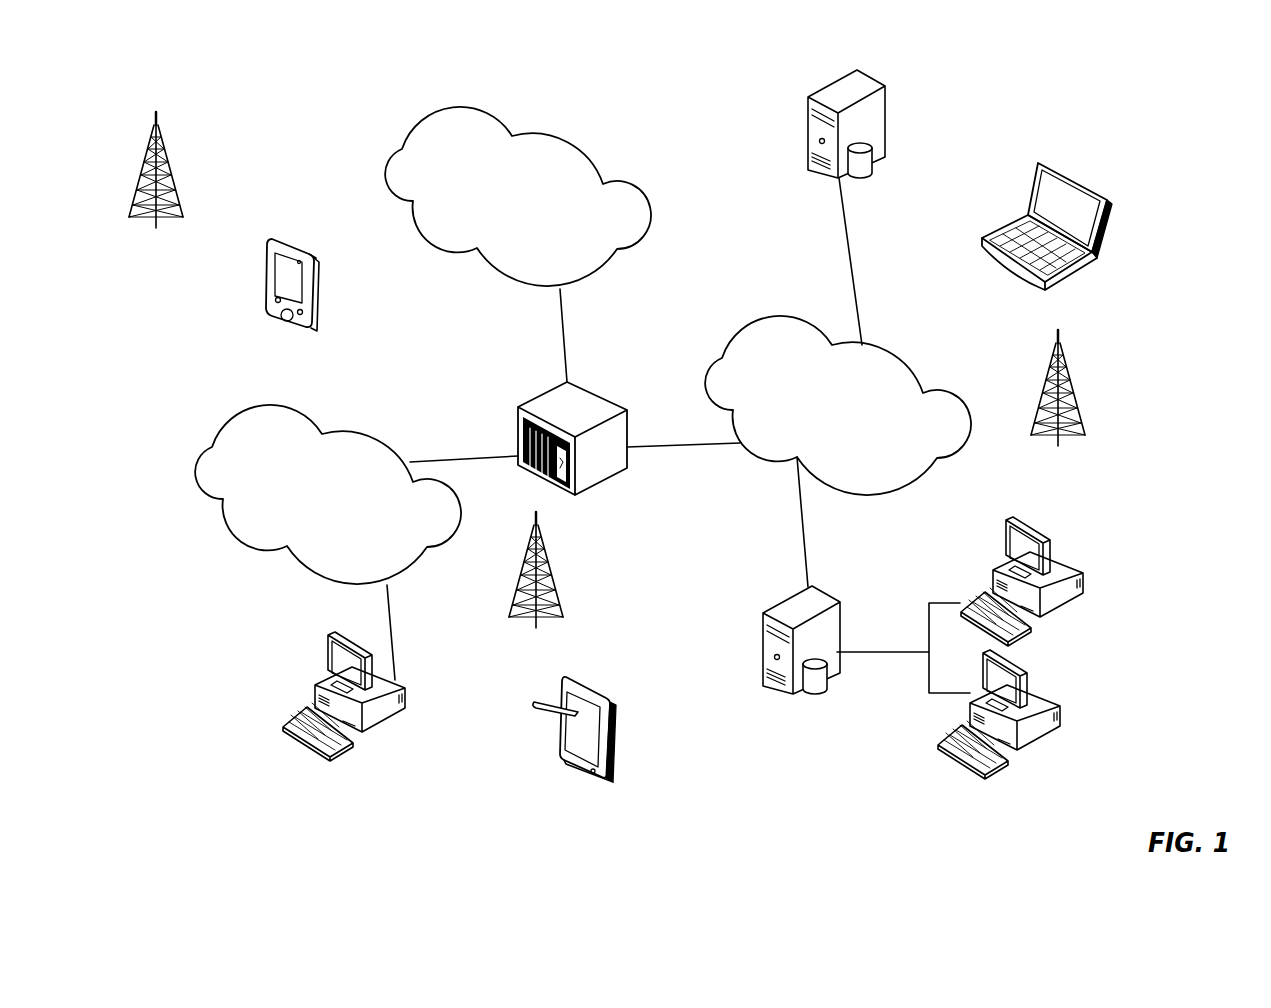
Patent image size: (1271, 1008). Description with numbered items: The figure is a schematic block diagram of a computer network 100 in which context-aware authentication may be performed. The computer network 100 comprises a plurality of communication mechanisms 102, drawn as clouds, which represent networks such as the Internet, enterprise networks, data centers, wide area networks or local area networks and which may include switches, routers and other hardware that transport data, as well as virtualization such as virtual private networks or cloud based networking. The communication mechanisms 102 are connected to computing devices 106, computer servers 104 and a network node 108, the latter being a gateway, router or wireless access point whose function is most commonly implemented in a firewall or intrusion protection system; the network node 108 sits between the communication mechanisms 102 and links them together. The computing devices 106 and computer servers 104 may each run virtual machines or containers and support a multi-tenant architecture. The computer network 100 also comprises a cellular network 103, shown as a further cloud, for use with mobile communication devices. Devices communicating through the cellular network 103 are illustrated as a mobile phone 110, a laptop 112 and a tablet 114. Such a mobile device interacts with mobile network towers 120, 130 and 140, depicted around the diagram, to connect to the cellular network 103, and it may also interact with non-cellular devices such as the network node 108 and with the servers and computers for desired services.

The computer network 100 is at (970, 150).
The communication mechanisms 102 is at (310, 418).
The cellular network 103 is at (557, 140).
The computer servers 104 is at (810, 115).
The computing devices 106 is at (405, 688).
The network node 108 is at (592, 392).
The mobile phone 110 is at (298, 243).
The laptop 112 is at (1083, 186).
The tablet 114 is at (597, 690).
The mobile network tower 120 is at (536, 584).
The mobile network tower 130 is at (1058, 402).
The mobile network tower 140 is at (156, 183).